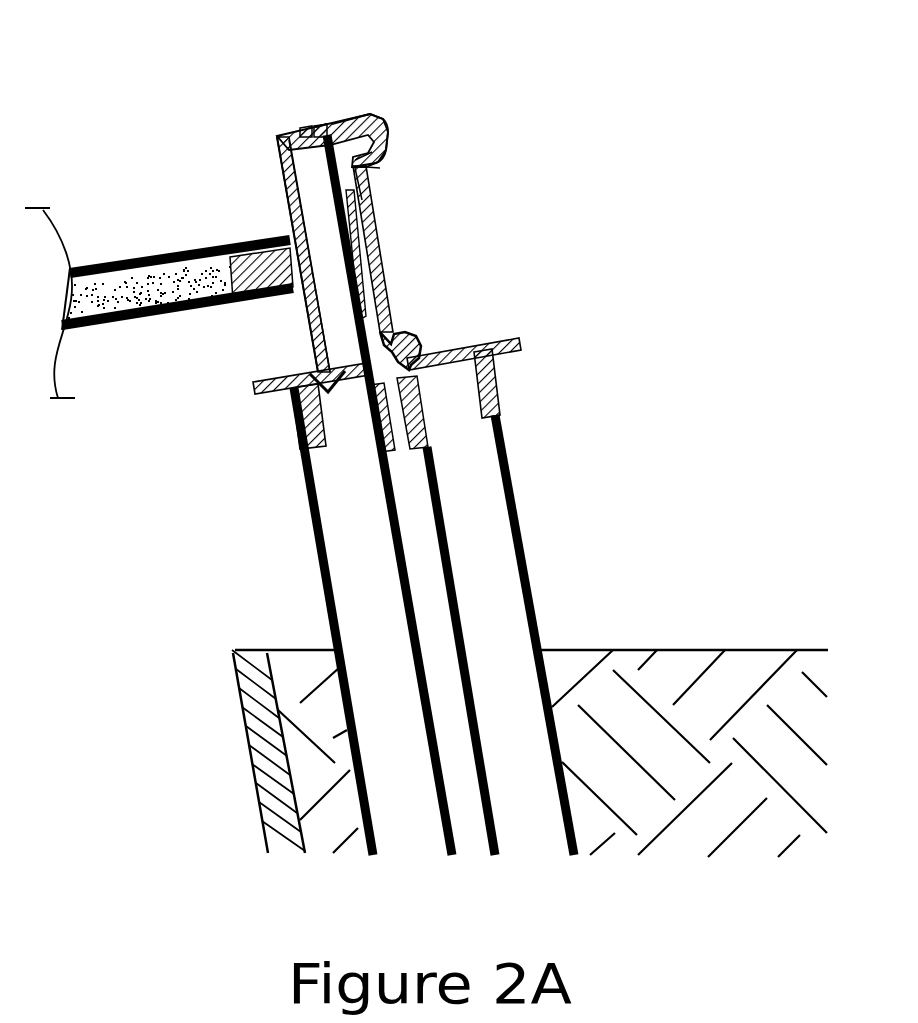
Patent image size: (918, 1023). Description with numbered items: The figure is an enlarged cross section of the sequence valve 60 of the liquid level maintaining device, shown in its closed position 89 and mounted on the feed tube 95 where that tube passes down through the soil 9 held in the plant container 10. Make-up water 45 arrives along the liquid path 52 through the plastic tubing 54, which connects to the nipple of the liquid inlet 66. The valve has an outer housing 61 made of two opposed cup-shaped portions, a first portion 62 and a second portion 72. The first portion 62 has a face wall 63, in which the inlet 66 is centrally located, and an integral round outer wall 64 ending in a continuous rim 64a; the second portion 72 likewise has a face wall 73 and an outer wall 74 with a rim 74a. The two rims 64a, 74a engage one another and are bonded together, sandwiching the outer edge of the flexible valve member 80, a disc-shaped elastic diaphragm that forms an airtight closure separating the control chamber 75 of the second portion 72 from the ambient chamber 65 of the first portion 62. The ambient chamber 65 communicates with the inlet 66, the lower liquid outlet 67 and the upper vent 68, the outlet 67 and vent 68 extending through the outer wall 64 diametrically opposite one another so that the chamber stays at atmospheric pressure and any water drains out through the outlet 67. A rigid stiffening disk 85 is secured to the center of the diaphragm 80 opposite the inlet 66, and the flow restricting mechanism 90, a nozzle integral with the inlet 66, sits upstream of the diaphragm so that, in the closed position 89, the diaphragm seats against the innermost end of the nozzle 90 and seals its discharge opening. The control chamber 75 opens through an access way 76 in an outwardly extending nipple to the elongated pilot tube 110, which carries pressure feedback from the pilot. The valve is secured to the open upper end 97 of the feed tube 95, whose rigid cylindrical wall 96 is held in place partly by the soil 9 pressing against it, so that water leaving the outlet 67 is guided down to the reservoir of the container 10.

The soil 9 is at (745, 677).
The container 10 is at (267, 748).
The make-up water 45 is at (133, 262).
The liquid path 52 is at (182, 253).
The tubing 54 is at (212, 252).
The sequence valve 60 is at (382, 132).
The outer housing 61 is at (387, 157).
The first cup-shaped portion 62 is at (280, 140).
The face wall 63 is at (288, 207).
The outer wall 64 is at (297, 133).
The rim 64a is at (303, 128).
The ambient chamber 65 is at (312, 174).
The liquid inlet 66 is at (241, 297).
The liquid outlet 67 is at (343, 390).
The vent 68 is at (312, 133).
The second cup-shaped portion 72 is at (377, 125).
The face wall 73 is at (373, 192).
The outer wall 74 is at (363, 117).
The rim 74a is at (316, 128).
The control chamber 75 is at (378, 168).
The access way 76 is at (402, 438).
The flexible valve member 80 is at (375, 335).
The stiffening disk 85 is at (356, 282).
The closed position 89 is at (362, 240).
The flow restricting mechanism 90 is at (340, 232).
The feed tube 95 is at (530, 585).
The cylindrical wall 96 is at (513, 468).
The open upper end 97 is at (522, 362).
The pilot tube 110 is at (472, 695).